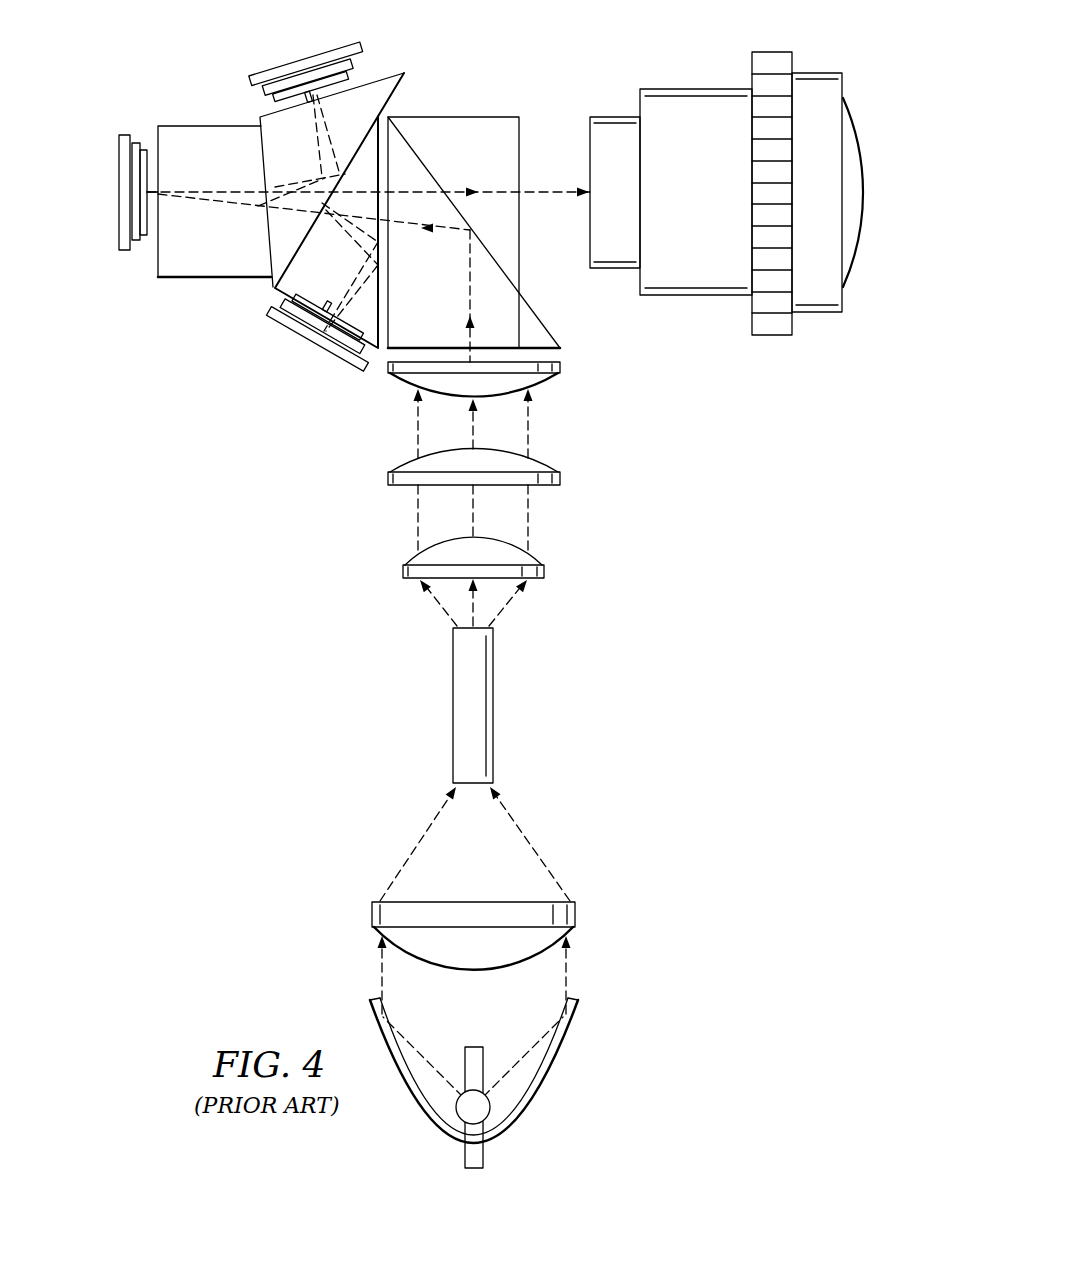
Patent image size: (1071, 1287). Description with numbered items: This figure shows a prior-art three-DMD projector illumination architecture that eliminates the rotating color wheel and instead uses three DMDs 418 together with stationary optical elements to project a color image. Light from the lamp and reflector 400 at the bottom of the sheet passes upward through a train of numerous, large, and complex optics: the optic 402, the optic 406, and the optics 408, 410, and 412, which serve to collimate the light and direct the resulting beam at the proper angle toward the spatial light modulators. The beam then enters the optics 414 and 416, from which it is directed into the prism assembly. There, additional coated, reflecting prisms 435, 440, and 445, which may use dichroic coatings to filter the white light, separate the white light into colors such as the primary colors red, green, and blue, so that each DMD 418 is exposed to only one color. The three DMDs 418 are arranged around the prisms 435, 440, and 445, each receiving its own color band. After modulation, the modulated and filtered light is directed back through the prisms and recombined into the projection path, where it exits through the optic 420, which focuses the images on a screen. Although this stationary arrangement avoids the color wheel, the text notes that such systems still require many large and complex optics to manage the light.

The lamp with reflector 400 is at (557, 1062).
The optic 402 is at (576, 920).
The optic 406 is at (494, 705).
The optic 408 is at (546, 577).
The optic 410 is at (562, 481).
The optic 412 is at (562, 369).
The optic 414 is at (545, 326).
The optic 416 is at (425, 167).
The DMD 418 is at (283, 66).
The optic 420 is at (864, 192).
The coated reflecting prism 435 is at (271, 288).
The coated reflecting prism 440 is at (397, 64).
The coated reflecting prism 445 is at (197, 125).